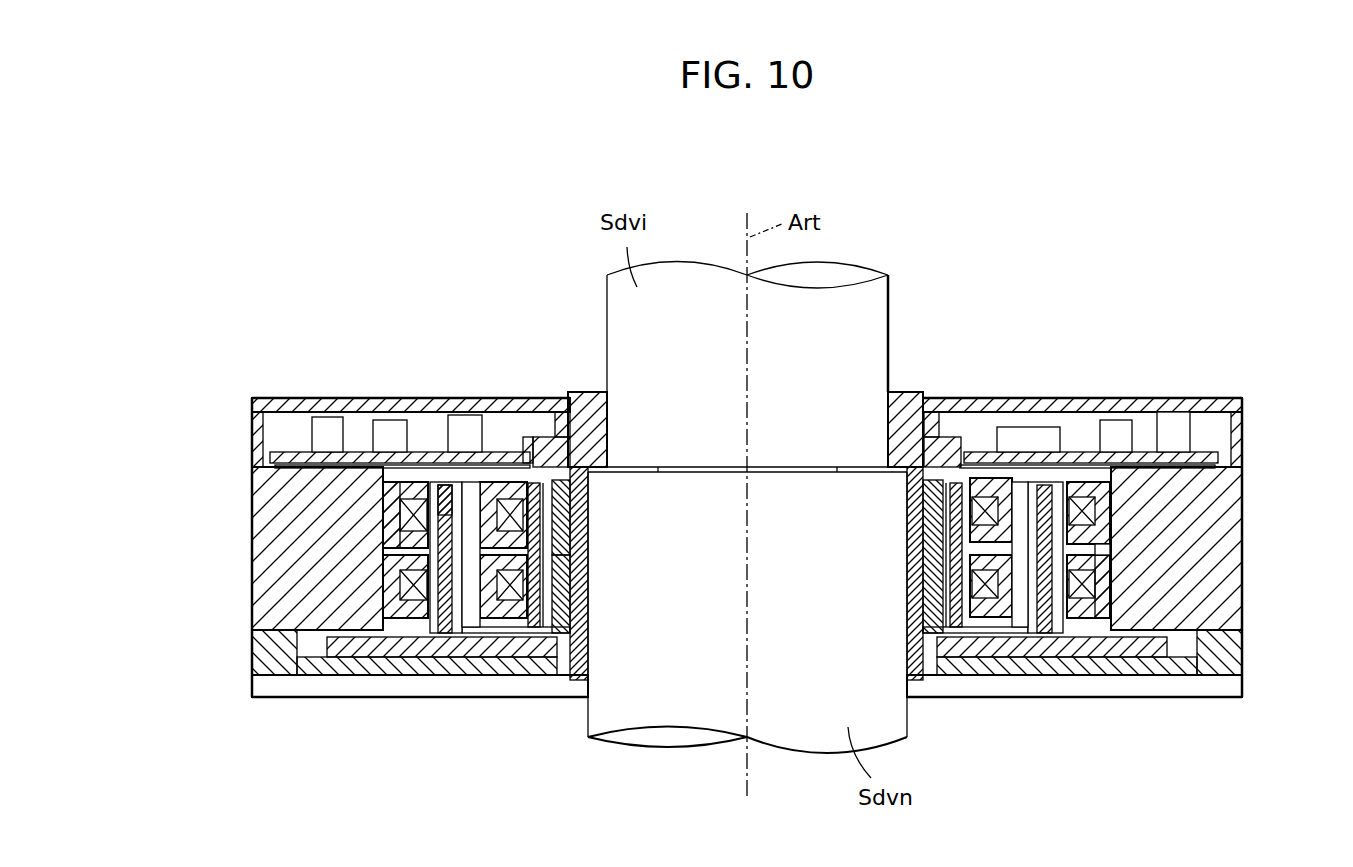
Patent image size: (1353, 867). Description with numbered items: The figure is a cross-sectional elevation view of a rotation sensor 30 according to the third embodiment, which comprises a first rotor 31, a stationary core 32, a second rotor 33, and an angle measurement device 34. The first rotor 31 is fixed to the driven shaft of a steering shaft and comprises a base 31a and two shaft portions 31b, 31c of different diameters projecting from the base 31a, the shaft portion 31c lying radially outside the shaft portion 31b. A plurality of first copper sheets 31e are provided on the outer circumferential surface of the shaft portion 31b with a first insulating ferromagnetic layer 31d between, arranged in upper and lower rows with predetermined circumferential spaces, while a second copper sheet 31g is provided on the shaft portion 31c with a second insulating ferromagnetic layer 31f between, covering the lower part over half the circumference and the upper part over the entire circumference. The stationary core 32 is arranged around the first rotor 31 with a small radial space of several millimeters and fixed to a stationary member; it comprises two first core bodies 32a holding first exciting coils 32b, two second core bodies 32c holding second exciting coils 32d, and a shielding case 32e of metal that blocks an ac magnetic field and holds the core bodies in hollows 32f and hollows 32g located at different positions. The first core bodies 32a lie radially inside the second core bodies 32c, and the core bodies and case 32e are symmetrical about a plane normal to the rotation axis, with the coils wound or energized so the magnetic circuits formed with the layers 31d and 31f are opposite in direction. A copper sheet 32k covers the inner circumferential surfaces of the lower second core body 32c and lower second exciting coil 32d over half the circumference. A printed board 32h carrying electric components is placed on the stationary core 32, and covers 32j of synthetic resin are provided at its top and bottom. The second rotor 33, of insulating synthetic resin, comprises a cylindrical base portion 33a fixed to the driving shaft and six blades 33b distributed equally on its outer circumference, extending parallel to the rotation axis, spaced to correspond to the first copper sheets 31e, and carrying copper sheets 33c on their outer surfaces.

The rotation sensor 30 is at (955, 340).
The first rotor 31 is at (1023, 662).
The base 31a is at (1120, 660).
The shaft portion 31b is at (912, 540).
The shaft portion 31c is at (1043, 636).
The first insulating ferromagnetic layer 31d is at (565, 560).
The first copper sheets 31e is at (578, 531).
The second insulating ferromagnetic layer 31f is at (447, 640).
The second copper sheet 31g is at (446, 482).
The stationary core 32 is at (1175, 634).
The first core bodies 32a is at (535, 622).
The first exciting coils 32b is at (500, 484).
The second core bodies 32c is at (410, 622).
The second exciting coils 32d is at (412, 498).
The shielding case 32e is at (1206, 462).
The hollows 32f is at (485, 622).
The hollows 32g is at (385, 510).
The printed board 32h is at (1146, 450).
The covers 32j is at (299, 404).
The copper sheet 32k is at (1105, 565).
The second rotor 33 is at (577, 388).
The cylindrical base portion 33a is at (895, 398).
The blades 33b is at (578, 614).
The copper sheets 33c is at (928, 605).
The angle measurement device 34 is at (297, 693).